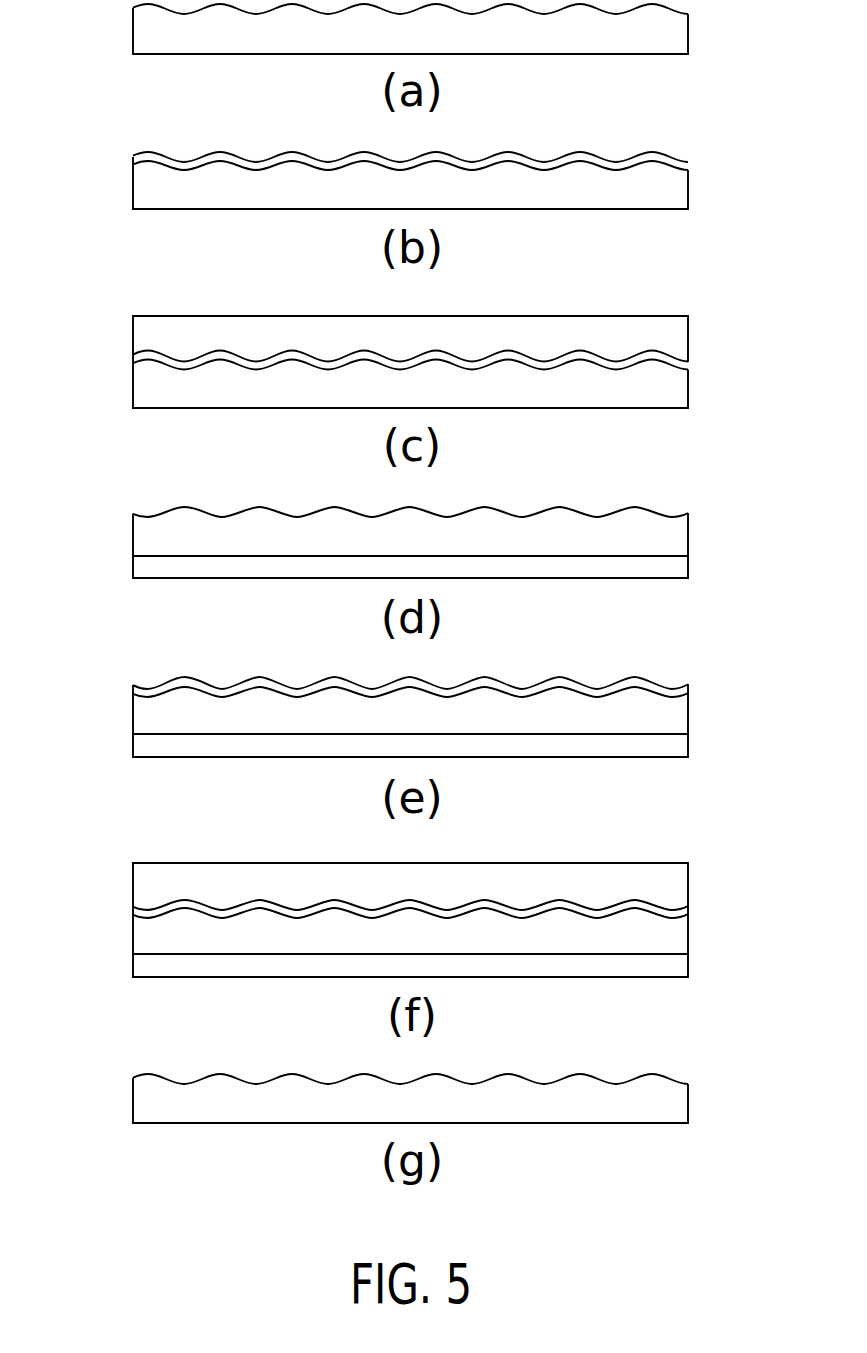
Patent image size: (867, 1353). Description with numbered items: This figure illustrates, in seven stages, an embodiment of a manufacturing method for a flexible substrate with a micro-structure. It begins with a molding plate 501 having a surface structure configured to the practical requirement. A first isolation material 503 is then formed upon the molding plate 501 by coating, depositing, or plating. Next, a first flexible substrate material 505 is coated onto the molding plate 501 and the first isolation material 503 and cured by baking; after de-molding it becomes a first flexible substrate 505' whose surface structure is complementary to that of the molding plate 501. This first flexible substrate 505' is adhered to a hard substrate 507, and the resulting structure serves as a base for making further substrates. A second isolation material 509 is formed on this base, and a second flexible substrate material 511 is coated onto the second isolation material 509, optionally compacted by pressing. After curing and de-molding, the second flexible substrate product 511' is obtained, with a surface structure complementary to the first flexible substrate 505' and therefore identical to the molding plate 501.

The molding plate 501 is at (148, 33).
The first isolation material 503 is at (148, 158).
The first flexible substrate material 505 is at (449, 339).
The first flexible substrate 505' is at (367, 730).
The hard substrate 507 is at (148, 569).
The second isolation material 509 is at (672, 698).
The second flexible substrate material 511 is at (449, 885).
The second flexible substrate product 511' is at (367, 1098).